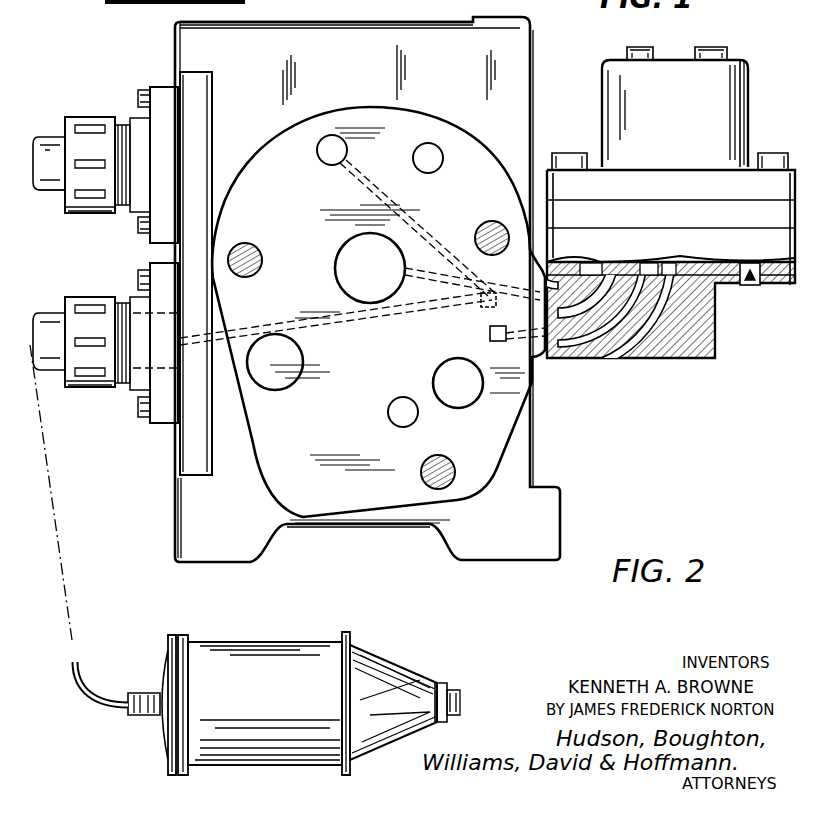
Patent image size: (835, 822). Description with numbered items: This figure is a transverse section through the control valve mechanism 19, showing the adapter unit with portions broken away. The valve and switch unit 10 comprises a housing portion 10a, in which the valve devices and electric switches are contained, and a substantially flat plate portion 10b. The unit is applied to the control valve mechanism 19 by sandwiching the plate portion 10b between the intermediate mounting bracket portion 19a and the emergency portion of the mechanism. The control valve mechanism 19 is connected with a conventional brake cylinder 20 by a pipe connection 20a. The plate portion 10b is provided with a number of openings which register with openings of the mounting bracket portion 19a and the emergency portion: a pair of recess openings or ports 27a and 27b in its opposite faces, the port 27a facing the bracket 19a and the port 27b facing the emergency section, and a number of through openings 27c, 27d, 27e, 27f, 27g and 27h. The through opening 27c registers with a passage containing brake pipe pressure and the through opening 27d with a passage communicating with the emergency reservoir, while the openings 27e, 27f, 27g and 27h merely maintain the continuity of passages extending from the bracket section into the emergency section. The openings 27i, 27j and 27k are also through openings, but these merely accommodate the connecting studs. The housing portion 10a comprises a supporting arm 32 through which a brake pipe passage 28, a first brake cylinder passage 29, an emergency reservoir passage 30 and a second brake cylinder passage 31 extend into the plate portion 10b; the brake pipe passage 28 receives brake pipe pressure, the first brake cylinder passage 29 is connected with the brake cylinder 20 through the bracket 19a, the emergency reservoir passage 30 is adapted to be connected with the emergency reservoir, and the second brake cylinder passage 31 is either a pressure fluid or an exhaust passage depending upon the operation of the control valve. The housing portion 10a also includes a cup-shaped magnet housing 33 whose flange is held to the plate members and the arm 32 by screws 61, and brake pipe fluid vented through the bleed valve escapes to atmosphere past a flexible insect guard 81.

The valve and switch unit 10 is at (672, 110).
The housing portion 10a is at (758, 105).
The plate portion 10b is at (492, 118).
The control valve mechanism 19 is at (386, 22).
The intermediate mounting bracket portion 19a is at (322, 14).
The brake cylinder 20 is at (276, 645).
The pipe connection 20a is at (92, 690).
The recess opening or port 27a is at (490, 292).
The recess opening or port 27b is at (490, 333).
The through opening 27c is at (357, 254).
The through opening 27d is at (330, 143).
The through opening 27e is at (428, 145).
The through opening 27f is at (440, 375).
The through opening 27g is at (396, 415).
The through opening 27h is at (290, 372).
The through opening 27i is at (490, 225).
The through opening 27j is at (452, 445).
The through opening 27k is at (250, 244).
The brake pipe passage 28 is at (579, 279).
The first brake cylinder passage 29 is at (611, 308).
The emergency reservoir passage 30 is at (594, 294).
The second brake cylinder passage 31 is at (630, 345).
The supporting arm 32 is at (716, 315).
The magnet housing 33 is at (750, 82).
The screws 61 is at (770, 156).
The flexible insect guard 81 is at (752, 284).